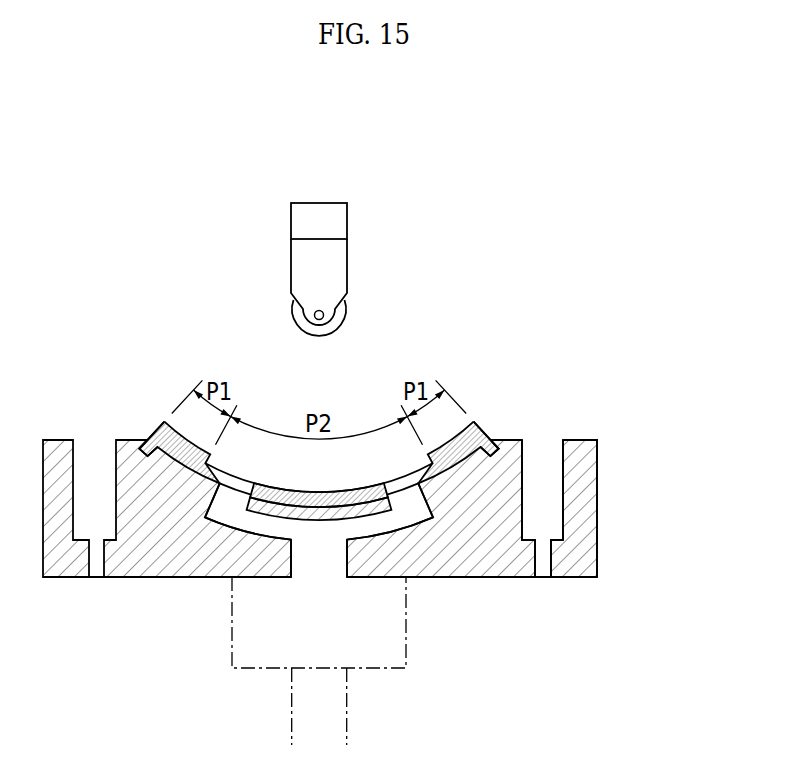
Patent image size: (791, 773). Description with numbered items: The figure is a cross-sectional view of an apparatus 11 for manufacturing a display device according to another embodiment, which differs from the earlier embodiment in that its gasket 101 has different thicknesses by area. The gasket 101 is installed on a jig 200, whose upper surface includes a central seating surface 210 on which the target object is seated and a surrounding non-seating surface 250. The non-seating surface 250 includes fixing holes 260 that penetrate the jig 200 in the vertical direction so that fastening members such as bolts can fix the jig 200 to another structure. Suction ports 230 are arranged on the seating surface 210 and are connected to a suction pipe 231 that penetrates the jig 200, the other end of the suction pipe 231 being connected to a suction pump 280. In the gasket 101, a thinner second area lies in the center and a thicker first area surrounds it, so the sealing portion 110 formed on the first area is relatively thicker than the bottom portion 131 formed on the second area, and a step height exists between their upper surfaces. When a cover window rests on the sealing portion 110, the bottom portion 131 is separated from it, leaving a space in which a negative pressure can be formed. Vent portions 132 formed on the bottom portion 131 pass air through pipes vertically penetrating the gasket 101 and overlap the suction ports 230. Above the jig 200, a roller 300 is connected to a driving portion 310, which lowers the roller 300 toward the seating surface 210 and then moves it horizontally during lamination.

The apparatus for manufacturing a display device 11 is at (349, 140).
The gasket 101 is at (490, 437).
The sealing portion 110 is at (455, 437).
The bottom portion 131 is at (290, 491).
The vent portion 132 is at (241, 489).
The jig 200 is at (614, 477).
The seating surface 210 is at (357, 503).
The suction port 230 is at (411, 498).
The suction pipe 231 is at (323, 564).
The non-seating surface 250 is at (578, 440).
The fixing hole 260 is at (550, 446).
The suction pump 280 is at (402, 640).
The roller 300 is at (347, 262).
The driving portion 310 is at (345, 213).